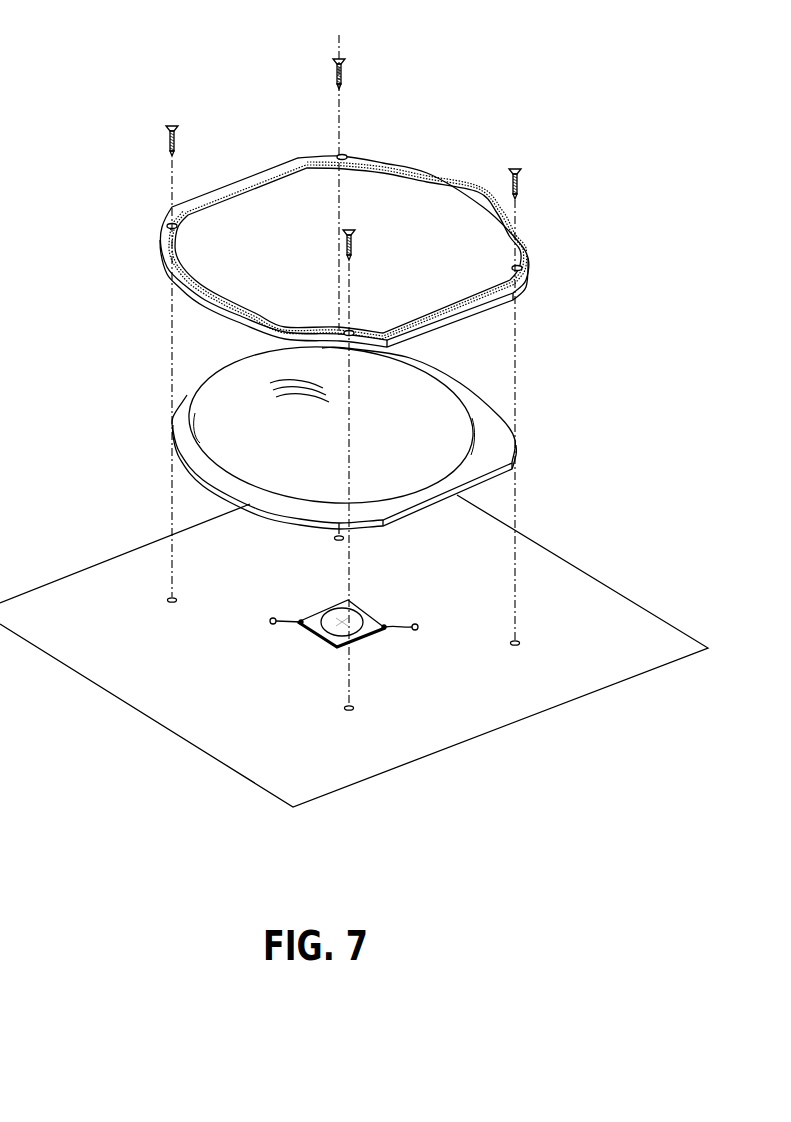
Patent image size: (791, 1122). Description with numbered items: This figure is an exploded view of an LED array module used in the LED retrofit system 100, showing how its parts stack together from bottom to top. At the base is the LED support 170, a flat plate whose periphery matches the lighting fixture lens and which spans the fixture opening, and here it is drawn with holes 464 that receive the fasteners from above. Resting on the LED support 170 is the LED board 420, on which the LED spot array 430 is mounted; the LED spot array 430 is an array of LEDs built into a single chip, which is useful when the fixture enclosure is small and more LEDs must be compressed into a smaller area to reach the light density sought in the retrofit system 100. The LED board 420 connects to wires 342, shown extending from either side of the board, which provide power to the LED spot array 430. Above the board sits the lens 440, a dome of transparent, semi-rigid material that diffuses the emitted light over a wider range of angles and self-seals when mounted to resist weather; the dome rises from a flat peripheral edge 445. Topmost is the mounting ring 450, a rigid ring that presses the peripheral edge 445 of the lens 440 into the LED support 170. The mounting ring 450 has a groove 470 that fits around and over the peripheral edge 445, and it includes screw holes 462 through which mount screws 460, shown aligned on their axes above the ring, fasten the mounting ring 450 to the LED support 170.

The LED retrofit system 100 is at (132, 83).
The LED support 170 is at (167, 728).
The wires 342 is at (291, 620).
The LED board 420 is at (327, 642).
The LED spot array 430 is at (355, 607).
The lens 440 is at (448, 358).
The peripheral edge 445 is at (400, 520).
The mounting ring 450 is at (431, 172).
The mount screw 460 is at (339, 57).
The screw hole 462 is at (342, 157).
The base plate screw holes 464 is at (172, 598).
The groove 470 is at (484, 271).